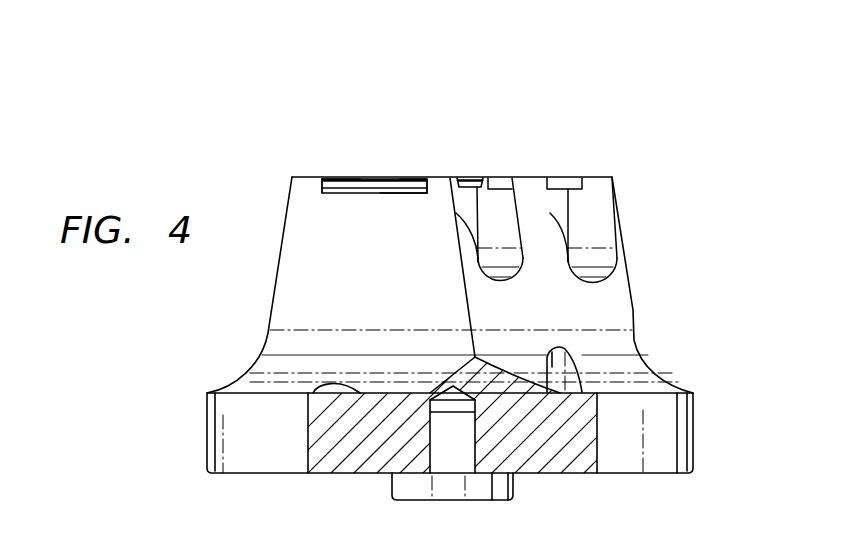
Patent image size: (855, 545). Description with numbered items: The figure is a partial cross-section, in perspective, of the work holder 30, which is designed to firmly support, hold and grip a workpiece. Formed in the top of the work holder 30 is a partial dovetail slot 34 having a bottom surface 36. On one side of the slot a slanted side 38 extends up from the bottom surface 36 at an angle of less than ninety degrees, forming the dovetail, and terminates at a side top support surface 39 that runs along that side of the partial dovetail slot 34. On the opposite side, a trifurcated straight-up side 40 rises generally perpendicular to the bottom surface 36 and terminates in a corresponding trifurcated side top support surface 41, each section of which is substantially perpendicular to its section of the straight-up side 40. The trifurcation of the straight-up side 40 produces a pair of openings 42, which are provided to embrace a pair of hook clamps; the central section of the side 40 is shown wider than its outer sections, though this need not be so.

The work holder 30 is at (450, 97).
The partial dovetail slot 34 is at (350, 193).
The bottom surface 36 is at (388, 193).
The slanted side 38 is at (325, 184).
The side top support surface 39 is at (345, 178).
The trifurcated straight-up side 40 is at (413, 182).
The trifurcated side top support surface 41 is at (443, 177).
The openings 42 is at (495, 208).